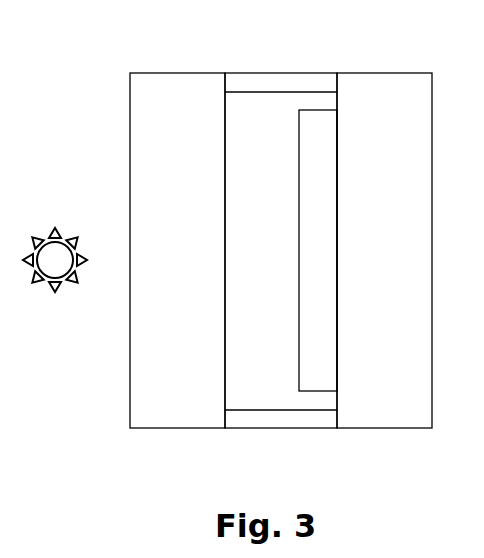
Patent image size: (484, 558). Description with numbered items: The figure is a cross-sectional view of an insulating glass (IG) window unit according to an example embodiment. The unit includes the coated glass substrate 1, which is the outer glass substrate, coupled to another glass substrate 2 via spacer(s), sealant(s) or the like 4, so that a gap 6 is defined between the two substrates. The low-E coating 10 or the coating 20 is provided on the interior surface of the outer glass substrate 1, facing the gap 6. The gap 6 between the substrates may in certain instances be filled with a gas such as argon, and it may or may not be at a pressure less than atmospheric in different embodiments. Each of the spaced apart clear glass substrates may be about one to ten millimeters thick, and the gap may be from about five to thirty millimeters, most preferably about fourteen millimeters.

The glass substrate 1 is at (383, 73).
The glass substrate 2 is at (180, 73).
The spacer(s), sealant(s) or the like 4 is at (270, 73).
The gap 6 is at (256, 254).
The coating 10 is at (272, 294).
The coating 20 is at (317, 391).